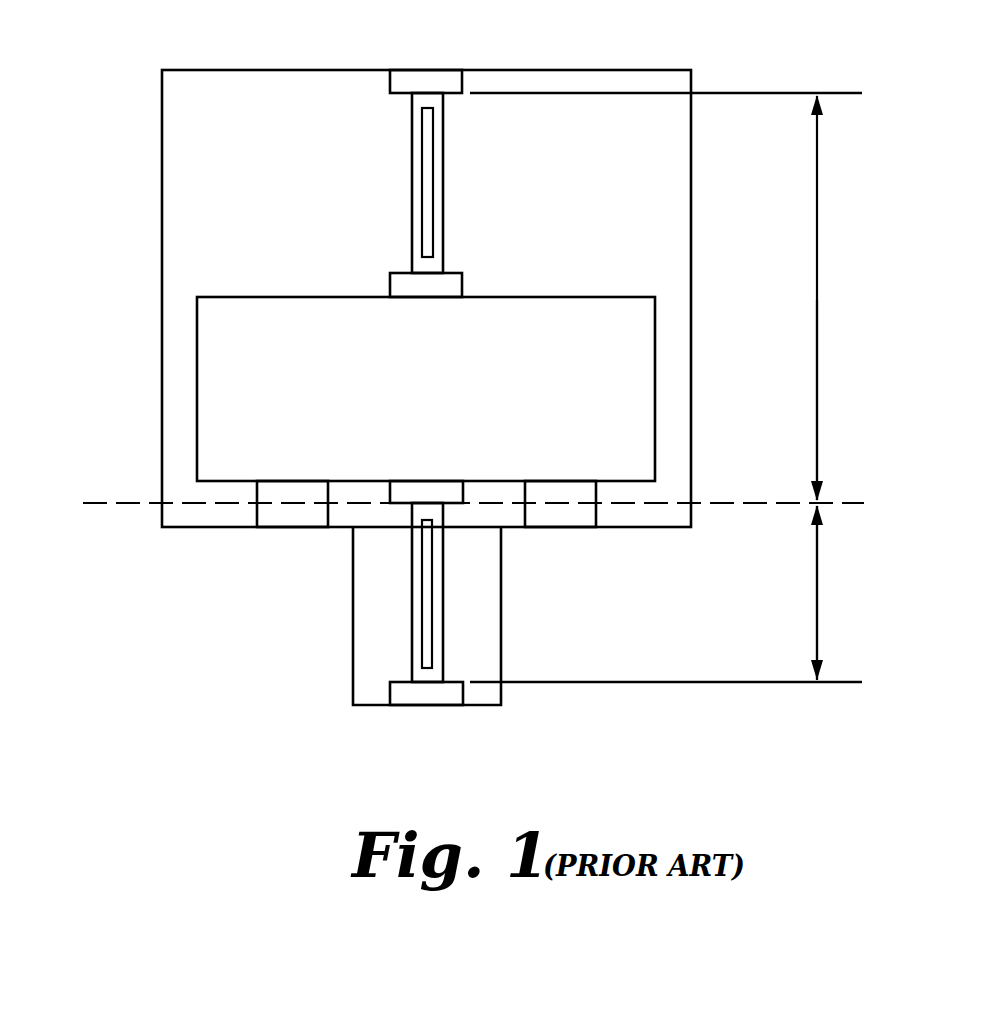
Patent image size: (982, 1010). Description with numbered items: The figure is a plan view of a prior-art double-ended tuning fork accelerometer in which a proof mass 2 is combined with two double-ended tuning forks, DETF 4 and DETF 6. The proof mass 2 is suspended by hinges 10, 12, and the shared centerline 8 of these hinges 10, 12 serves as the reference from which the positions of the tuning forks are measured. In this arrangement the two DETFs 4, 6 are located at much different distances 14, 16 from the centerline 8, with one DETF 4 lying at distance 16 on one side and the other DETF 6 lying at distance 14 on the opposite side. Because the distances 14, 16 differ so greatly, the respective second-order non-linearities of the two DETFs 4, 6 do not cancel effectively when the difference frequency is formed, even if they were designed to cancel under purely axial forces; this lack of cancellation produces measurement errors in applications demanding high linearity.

The proof mass 2 is at (220, 438).
The DETF 4 is at (410, 186).
The DETF 6 is at (412, 595).
The centerline 8 is at (112, 505).
The hinge 10 is at (290, 517).
The hinge 12 is at (562, 517).
The distance 14 is at (817, 575).
The distance 16 is at (817, 253).